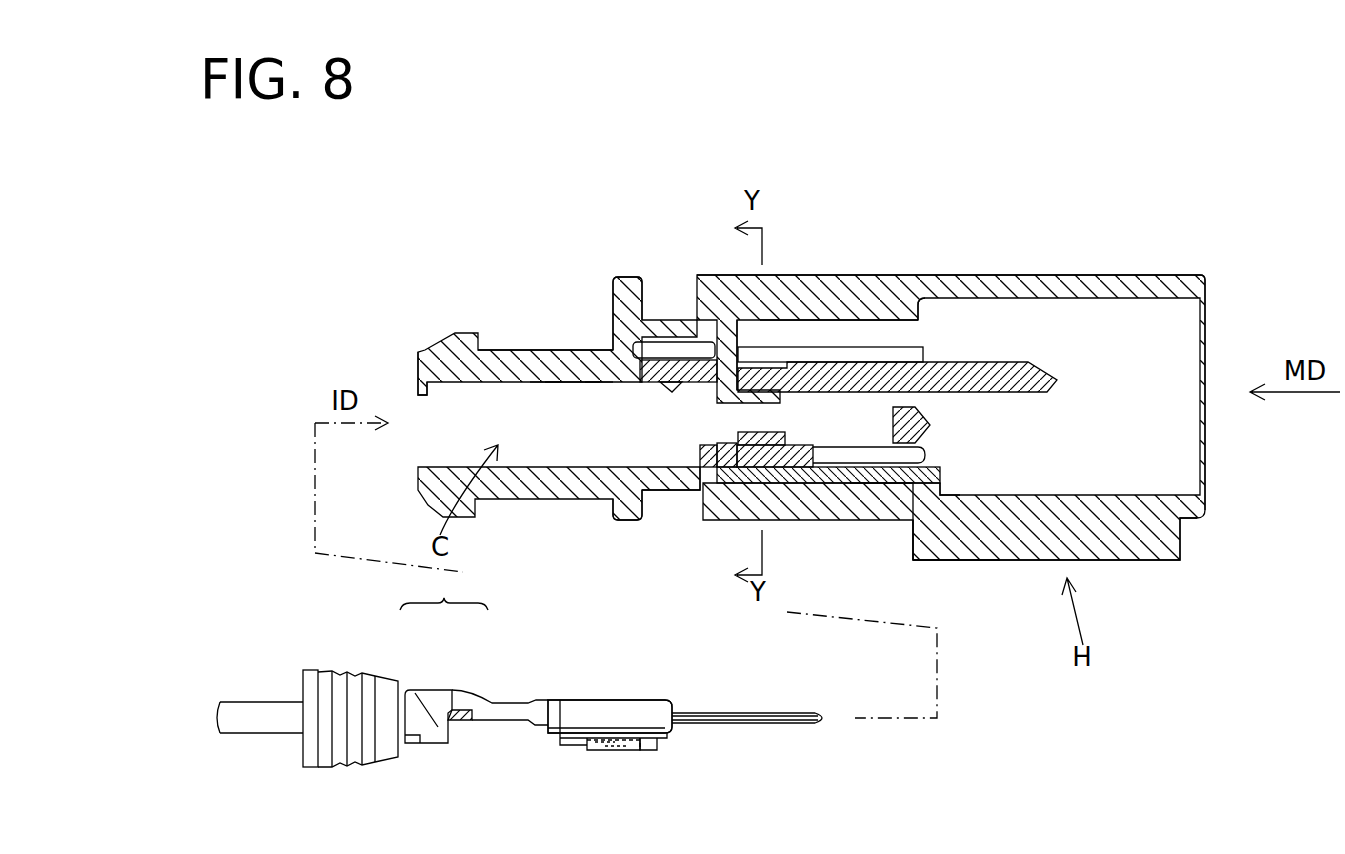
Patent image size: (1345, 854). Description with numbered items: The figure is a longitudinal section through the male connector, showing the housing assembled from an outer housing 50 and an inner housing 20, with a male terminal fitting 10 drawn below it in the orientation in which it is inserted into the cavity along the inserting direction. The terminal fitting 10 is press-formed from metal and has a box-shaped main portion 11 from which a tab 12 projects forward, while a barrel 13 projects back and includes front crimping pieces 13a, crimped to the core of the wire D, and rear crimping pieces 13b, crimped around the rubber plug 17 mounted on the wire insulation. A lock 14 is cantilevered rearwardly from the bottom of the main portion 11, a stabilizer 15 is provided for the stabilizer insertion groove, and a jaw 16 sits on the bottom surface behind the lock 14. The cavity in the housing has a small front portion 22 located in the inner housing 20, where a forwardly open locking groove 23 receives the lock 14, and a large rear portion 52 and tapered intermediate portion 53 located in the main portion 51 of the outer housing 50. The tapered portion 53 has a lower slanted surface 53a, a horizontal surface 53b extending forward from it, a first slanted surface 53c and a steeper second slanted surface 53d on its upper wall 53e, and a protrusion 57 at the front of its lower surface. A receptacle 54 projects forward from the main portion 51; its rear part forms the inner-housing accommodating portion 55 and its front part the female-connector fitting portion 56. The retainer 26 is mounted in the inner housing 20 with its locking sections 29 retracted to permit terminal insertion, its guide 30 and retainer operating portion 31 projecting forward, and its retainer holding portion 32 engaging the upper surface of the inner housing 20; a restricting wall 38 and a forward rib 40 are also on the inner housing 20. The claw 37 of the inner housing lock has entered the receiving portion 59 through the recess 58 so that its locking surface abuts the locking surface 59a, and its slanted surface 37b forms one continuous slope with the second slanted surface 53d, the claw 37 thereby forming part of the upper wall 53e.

The male terminal fitting 10 is at (650, 700).
The main portion 11 is at (603, 718).
The tab 12 is at (748, 724).
The barrel 13 is at (444, 588).
The front crimping pieces 13a is at (492, 710).
The rear crimping pieces 13b is at (440, 728).
The lock 14 is at (630, 750).
The stabilizer 15 is at (620, 749).
The jaw 16 is at (558, 736).
The rubber plug 17 is at (340, 748).
The inner housing 20 is at (925, 333).
The small front portion 22 is at (822, 427).
The locking groove 23 is at (830, 457).
The retainer 26 is at (757, 483).
The locking sections 29 is at (760, 440).
The guide 30 is at (763, 448).
The retainer operating portion 31 is at (945, 481).
The retainer holding portion 32 is at (900, 318).
The claw 37 is at (645, 360).
The slanted surface 37b is at (597, 380).
The restricting wall 38 is at (752, 327).
The rib 40 is at (988, 377).
The outer housing 50 is at (1118, 273).
The main portion 51 is at (497, 348).
The large rear portion 52 is at (413, 393).
The tapered intermediate portion 53 is at (585, 450).
The lower slanted surface 53a is at (620, 462).
The horizontal surface 53b is at (687, 445).
The first slanted surface 53c is at (575, 397).
The second slanted surface 53d is at (550, 393).
The upper wall 53e is at (778, 323).
The receptacle 54 is at (941, 586).
The inner-housing accommodating portion 55 is at (863, 503).
The female-connector fitting portion 56 is at (945, 513).
The protrusion 57 is at (710, 468).
The recess 58 is at (706, 340).
The receiving portion 59 is at (678, 371).
The locking surface 59a is at (667, 385).
The wire D is at (267, 724).